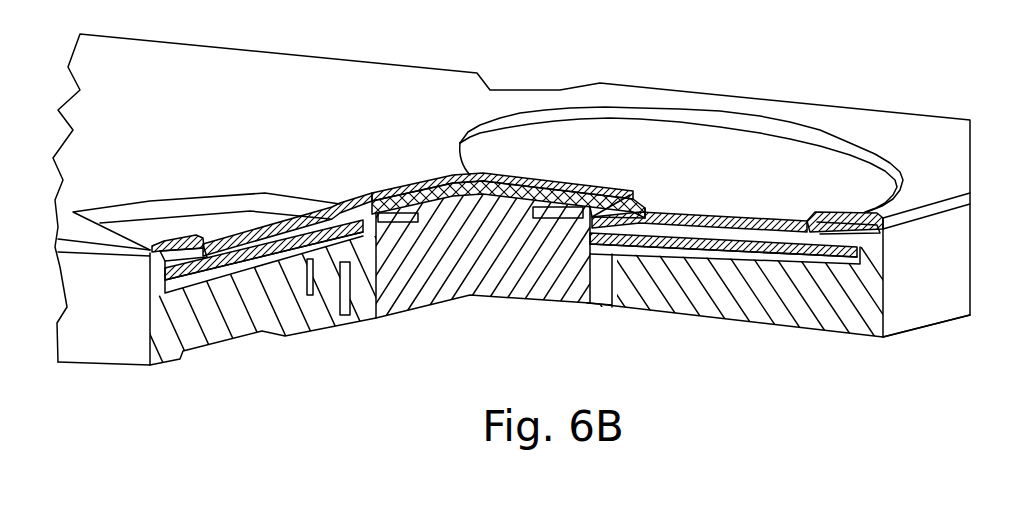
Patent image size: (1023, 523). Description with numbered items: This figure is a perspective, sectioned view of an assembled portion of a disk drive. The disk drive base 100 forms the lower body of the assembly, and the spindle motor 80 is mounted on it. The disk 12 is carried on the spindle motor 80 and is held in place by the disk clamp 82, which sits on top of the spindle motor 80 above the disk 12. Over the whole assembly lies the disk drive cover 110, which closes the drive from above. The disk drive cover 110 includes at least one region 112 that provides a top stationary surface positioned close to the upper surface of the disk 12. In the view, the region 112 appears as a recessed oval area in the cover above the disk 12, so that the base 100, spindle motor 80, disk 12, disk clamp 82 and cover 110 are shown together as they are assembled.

The disk 12 is at (263, 252).
The spindle motor 80 is at (470, 290).
The disk clamp 82 is at (418, 195).
The disk drive base 100 is at (730, 297).
The disk drive cover 110 is at (920, 133).
The region 112 is at (665, 147).